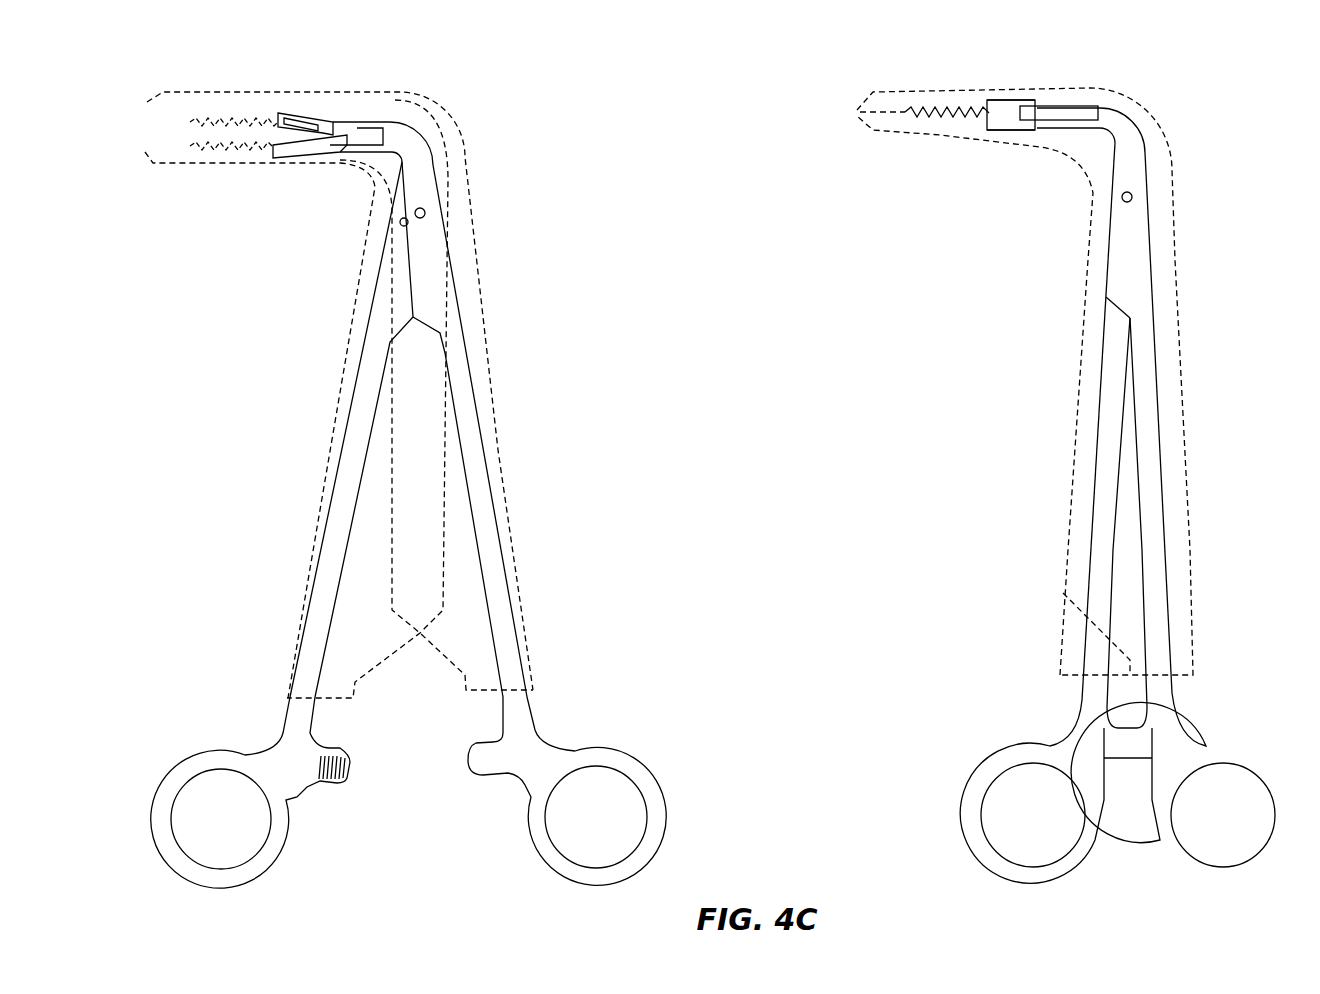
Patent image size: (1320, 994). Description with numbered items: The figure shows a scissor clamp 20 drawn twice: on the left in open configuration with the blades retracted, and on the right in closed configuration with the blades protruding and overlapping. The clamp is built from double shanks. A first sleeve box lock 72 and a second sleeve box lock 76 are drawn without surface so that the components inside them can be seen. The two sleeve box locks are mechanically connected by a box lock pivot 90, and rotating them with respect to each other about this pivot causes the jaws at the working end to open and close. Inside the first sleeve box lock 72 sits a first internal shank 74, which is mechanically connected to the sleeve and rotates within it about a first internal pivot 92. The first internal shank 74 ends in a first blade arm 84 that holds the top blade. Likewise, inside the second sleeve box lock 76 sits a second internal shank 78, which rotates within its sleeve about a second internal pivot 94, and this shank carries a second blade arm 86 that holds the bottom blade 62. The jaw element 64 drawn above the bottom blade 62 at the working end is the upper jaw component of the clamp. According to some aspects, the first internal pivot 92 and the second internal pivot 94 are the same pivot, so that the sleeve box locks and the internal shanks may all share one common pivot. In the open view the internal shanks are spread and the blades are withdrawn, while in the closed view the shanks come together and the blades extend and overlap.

The scissor clamp 20 is at (604, 715).
The bottom blade 62 is at (293, 158).
The second jaw 64 is at (297, 118).
The first sleeve box lock 72 is at (330, 457).
The first internal shank 74 is at (283, 728).
The second sleeve box lock 76 is at (480, 290).
The second internal shank 78 is at (467, 408).
The first blade arm 84 is at (358, 153).
The second blade arm 86 is at (380, 125).
The box lock pivot 90 is at (357, 137).
The first internal pivot 92 is at (426, 212).
The second internal pivot 94 is at (1132, 197).